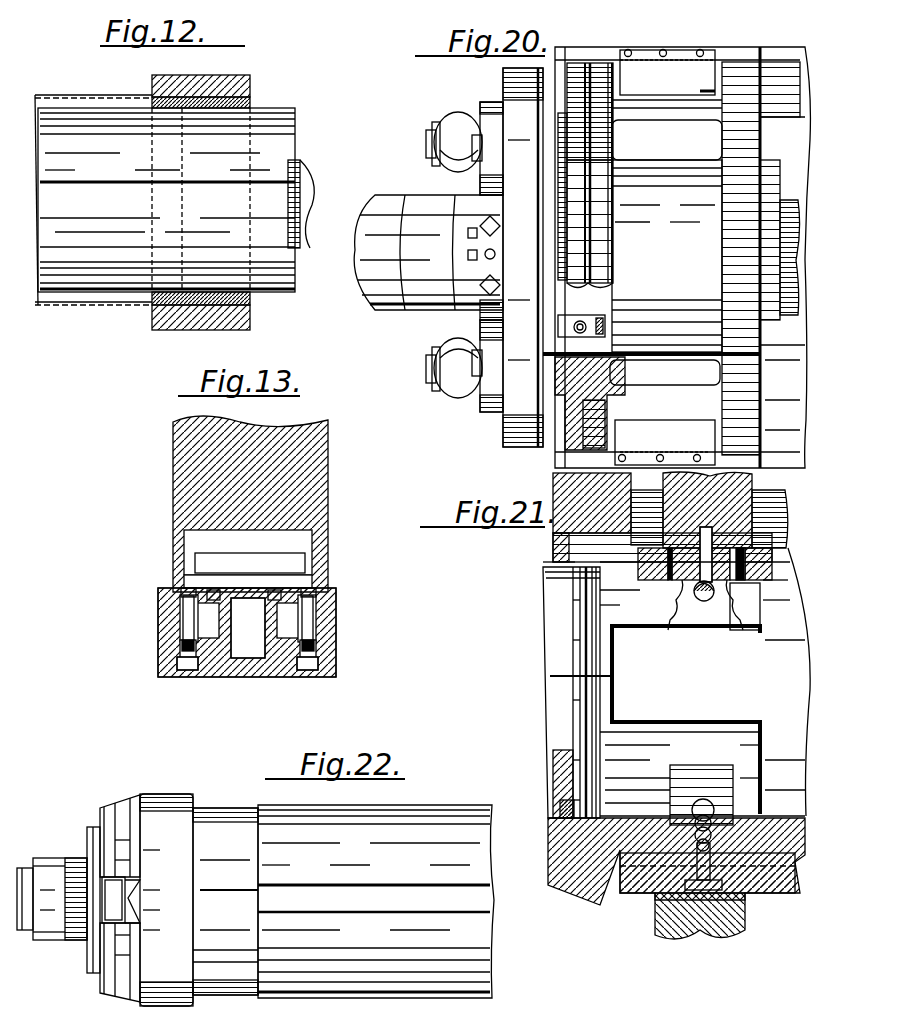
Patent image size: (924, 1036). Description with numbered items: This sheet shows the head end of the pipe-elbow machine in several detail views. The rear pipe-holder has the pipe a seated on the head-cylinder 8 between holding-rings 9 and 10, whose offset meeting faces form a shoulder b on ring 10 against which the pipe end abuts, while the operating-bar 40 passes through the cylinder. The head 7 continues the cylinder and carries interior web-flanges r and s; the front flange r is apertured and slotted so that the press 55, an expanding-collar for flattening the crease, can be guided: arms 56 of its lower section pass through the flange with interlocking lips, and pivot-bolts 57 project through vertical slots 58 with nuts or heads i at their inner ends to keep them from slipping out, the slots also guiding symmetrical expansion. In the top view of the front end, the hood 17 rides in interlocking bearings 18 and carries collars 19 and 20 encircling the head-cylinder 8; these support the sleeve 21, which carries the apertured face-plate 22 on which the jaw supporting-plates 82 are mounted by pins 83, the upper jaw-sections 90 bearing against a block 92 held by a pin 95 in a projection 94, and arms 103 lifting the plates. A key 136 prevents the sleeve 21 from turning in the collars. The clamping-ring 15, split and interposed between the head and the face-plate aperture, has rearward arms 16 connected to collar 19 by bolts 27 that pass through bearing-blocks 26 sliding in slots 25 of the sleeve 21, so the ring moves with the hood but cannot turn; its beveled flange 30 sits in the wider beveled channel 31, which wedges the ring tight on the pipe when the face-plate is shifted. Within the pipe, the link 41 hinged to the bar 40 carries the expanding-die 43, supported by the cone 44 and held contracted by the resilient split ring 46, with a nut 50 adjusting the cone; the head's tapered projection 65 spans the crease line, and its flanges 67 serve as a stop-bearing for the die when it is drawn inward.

In FIG. 22, the stationary head 7 is at (199, 900).
In FIG. 12, the head-cylinder 8 is at (165, 200).
In FIG. 13, the head-cylinder 8 is at (316, 488).
In FIG. 22, the head-cylinder 8 is at (412, 820).
In FIG. 20, the head-cylinder 8 is at (782, 246).
In FIG. 12, the holding-ring 9 is at (250, 92).
In FIG. 12, the holding-ring 10 is at (215, 72).
In FIG. 21, the split clamping-ring 15 is at (580, 664).
In FIG. 21, the rearwardly-projecting arms 16 is at (676, 683).
In FIG. 20, the hood 17 is at (644, 122).
In FIG. 20, the interlocking bearings 18 is at (695, 92).
In FIG. 20, the collar 19 is at (595, 226).
In FIG. 21, the collar 19 is at (740, 488).
In FIG. 20, the collar 20 is at (762, 135).
In FIG. 20, the sleeve 21 is at (651, 257).
In FIG. 21, the sleeve 21 is at (645, 580).
In FIG. 20, the face-plate 22 is at (523, 257).
In FIG. 21, the face-plate 22 is at (570, 900).
In FIG. 20, the slots 25 is at (585, 322).
In FIG. 21, the slots 25 is at (745, 572).
In FIG. 20, the bearing-blocks 26 is at (600, 322).
In FIG. 21, the bearing-blocks 26 is at (745, 612).
In FIG. 21, the bolts 27 is at (704, 603).
In FIG. 21, the flange 30 is at (582, 730).
In FIG. 21, the annular channel 31 is at (555, 808).
In FIG. 12, the operating-bar 40 is at (308, 182).
In FIG. 22, the link 41 is at (62, 920).
In FIG. 22, the expanding-die 43 is at (110, 830).
In FIG. 22, the cone 44 is at (92, 945).
In FIG. 22, the split ring 46 is at (133, 782).
In FIG. 22, the nut 50 is at (48, 870).
In FIG. 13, the expanding-collar 55 is at (230, 672).
In FIG. 13, the arms 56 is at (248, 615).
In FIG. 13, the pivot-bolts 57 is at (190, 674).
In FIG. 13, the slots 58 is at (162, 612).
In FIG. 22, the tapered projection 65 is at (128, 897).
In FIG. 22, the outwardly-projecting flanges 67 is at (138, 917).
In FIG. 20, the supporting-plates 82 is at (490, 102).
In FIG. 20, the pins 83 is at (472, 152).
In FIG. 20, the upper jaw-sections 90 is at (490, 196).
In FIG. 20, the block 92 is at (490, 308).
In FIG. 20, the projection 94 is at (498, 280).
In FIG. 20, the pin 95 is at (496, 252).
In FIG. 20, the arms 103 is at (454, 255).
In FIG. 21, the key 136 is at (755, 885).
In FIG. 12, the pipe a is at (140, 94).
In FIG. 20, the pipe a is at (428, 252).
In FIG. 12, the shoulder b is at (195, 97).
In FIG. 13, the nuts or heads i is at (178, 590).
In FIG. 13, the front web-flange r is at (253, 587).
In FIG. 13, the rear web-flange s is at (248, 552).